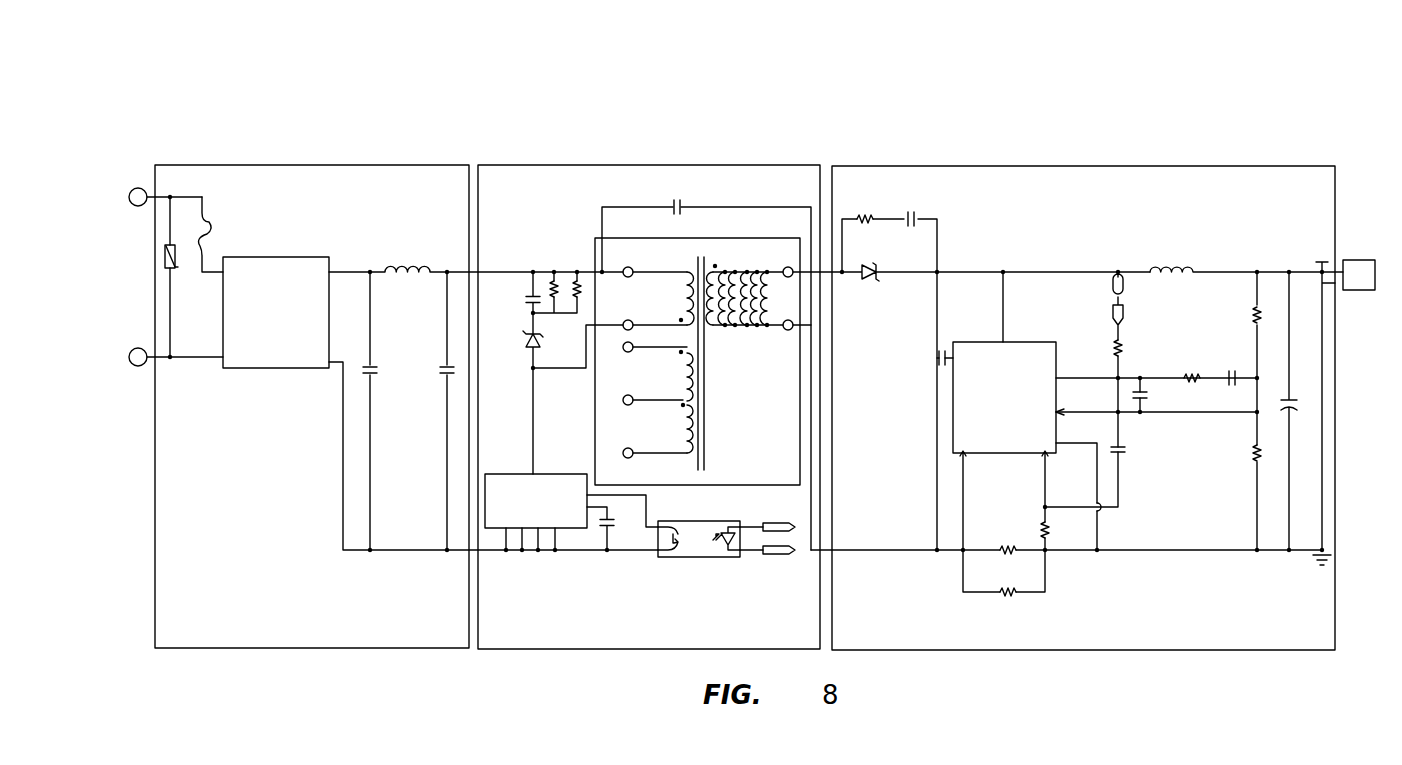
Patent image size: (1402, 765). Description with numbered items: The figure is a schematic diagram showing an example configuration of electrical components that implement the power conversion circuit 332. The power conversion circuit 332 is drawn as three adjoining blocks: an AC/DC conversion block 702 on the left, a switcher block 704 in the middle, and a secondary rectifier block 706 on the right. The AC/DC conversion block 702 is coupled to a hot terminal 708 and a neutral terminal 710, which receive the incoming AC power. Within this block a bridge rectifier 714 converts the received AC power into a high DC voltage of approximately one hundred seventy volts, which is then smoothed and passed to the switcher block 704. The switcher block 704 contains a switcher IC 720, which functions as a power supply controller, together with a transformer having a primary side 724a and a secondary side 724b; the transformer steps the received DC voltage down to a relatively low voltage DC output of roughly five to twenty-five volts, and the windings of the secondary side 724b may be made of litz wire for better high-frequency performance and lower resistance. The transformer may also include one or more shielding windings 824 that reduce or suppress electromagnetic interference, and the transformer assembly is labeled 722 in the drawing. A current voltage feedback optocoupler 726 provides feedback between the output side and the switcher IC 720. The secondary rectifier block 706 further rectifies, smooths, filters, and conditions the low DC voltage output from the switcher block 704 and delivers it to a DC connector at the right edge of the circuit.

The power conversion circuit 332 is at (1293, 80).
The AC/DC conversion block 702 is at (318, 165).
The switcher block 704 is at (655, 165).
The secondary rectifier block 706 is at (1082, 166).
The hot terminal 708 is at (141, 188).
The neutral terminal 710 is at (141, 366).
The bridge rectifier 714 is at (264, 370).
The switcher integrated circuit (IC) 720 is at (549, 472).
The transformer 722 is at (713, 486).
The primary side 724a is at (673, 278).
The secondary side 724b is at (731, 270).
The shielding windings 824 is at (684, 404).
The current voltage feedback optocoupler 726 is at (1029, 342).